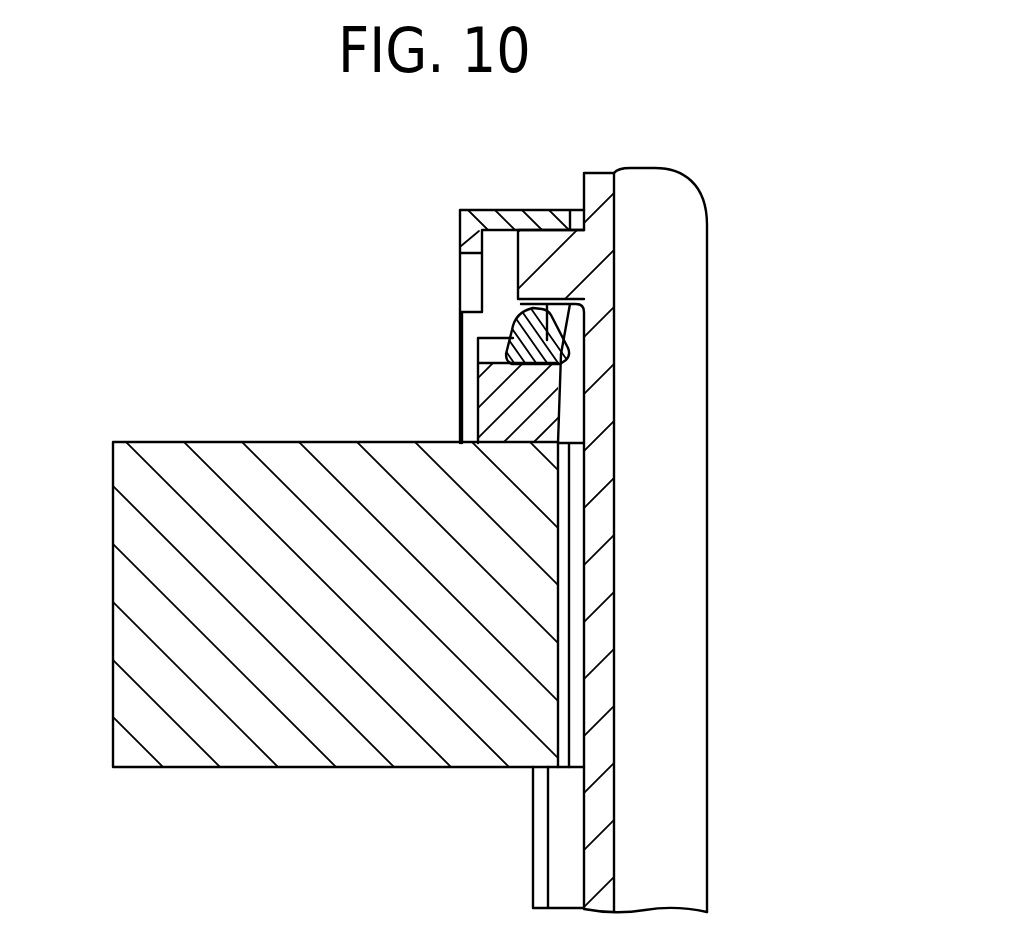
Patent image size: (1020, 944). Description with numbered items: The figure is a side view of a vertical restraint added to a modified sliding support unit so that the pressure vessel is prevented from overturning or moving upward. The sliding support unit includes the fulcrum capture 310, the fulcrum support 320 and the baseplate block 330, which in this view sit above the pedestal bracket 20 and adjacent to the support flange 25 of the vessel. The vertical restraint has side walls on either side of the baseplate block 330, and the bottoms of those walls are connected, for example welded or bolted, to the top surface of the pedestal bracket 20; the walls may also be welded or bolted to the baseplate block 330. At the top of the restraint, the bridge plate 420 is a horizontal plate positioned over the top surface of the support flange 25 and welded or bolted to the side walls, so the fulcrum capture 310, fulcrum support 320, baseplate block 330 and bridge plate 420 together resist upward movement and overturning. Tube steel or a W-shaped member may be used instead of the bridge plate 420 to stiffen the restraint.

The pedestal bracket 20 is at (125, 587).
The support flange 25 is at (737, 226).
The fulcrum capture 310 is at (725, 306).
The fulcrum support 320 is at (725, 341).
The baseplate block 330 is at (727, 407).
The bridge plate 420 is at (485, 218).